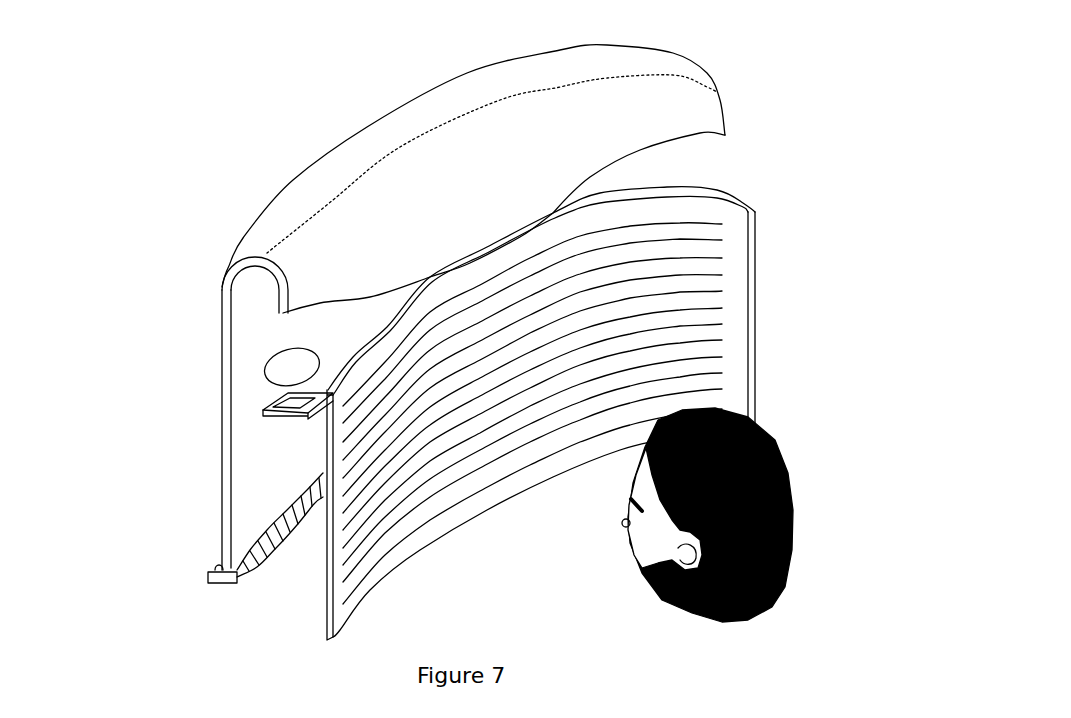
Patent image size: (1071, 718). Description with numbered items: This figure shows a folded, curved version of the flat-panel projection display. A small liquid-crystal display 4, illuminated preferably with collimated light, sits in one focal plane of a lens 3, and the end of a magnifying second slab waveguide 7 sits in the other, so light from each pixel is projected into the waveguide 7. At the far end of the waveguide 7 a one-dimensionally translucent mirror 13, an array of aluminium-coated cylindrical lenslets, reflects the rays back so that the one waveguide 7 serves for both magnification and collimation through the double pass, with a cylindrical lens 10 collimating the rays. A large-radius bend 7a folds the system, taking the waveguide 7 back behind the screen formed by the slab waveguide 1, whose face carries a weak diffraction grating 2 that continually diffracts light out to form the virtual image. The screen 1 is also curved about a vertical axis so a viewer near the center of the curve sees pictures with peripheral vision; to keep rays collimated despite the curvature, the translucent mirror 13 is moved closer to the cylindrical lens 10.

The slab waveguide 1 is at (759, 249).
The weak diffraction grating 2 is at (474, 485).
The lens 3 is at (260, 365).
The liquid-crystal display 4 is at (262, 412).
The second slab waveguide 7 is at (222, 509).
The bend 7a is at (681, 70).
The cylindrical lens 10 is at (292, 314).
The one-dimensionally translucent mirror 13 is at (207, 572).